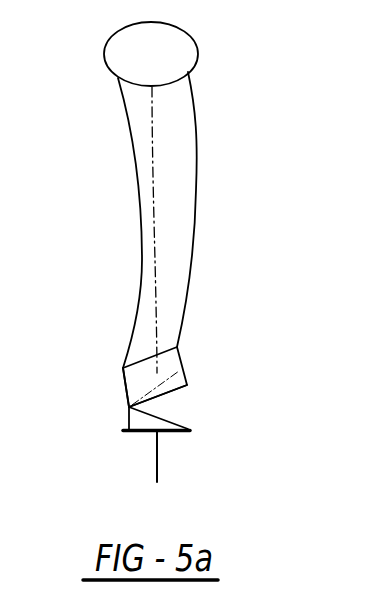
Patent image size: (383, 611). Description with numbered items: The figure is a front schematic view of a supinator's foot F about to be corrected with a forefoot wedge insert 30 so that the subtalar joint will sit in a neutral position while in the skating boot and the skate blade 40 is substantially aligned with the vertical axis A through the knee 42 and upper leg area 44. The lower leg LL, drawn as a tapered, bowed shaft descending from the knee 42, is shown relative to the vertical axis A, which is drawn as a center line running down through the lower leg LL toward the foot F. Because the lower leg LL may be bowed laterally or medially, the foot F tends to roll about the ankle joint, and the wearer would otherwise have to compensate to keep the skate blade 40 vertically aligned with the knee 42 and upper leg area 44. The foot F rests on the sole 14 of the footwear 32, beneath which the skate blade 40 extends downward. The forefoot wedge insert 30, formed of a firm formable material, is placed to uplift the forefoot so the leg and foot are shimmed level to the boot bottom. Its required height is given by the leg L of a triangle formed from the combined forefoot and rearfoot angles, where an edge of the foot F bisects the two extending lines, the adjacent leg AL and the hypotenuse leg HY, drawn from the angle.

The knee 42 is at (214, 52).
The upper leg area 44 is at (224, 90).
The vertical axis A is at (152, 167).
The lower leg LL is at (100, 145).
The sole 14 is at (126, 441).
The foot F is at (195, 357).
The leg L is at (121, 403).
The forefoot wedge insert 30 is at (122, 415).
The hypotenuse leg HY is at (174, 410).
The footwear 32 is at (141, 448).
The skate blade 40 is at (157, 462).
The adjacent leg AL is at (173, 434).